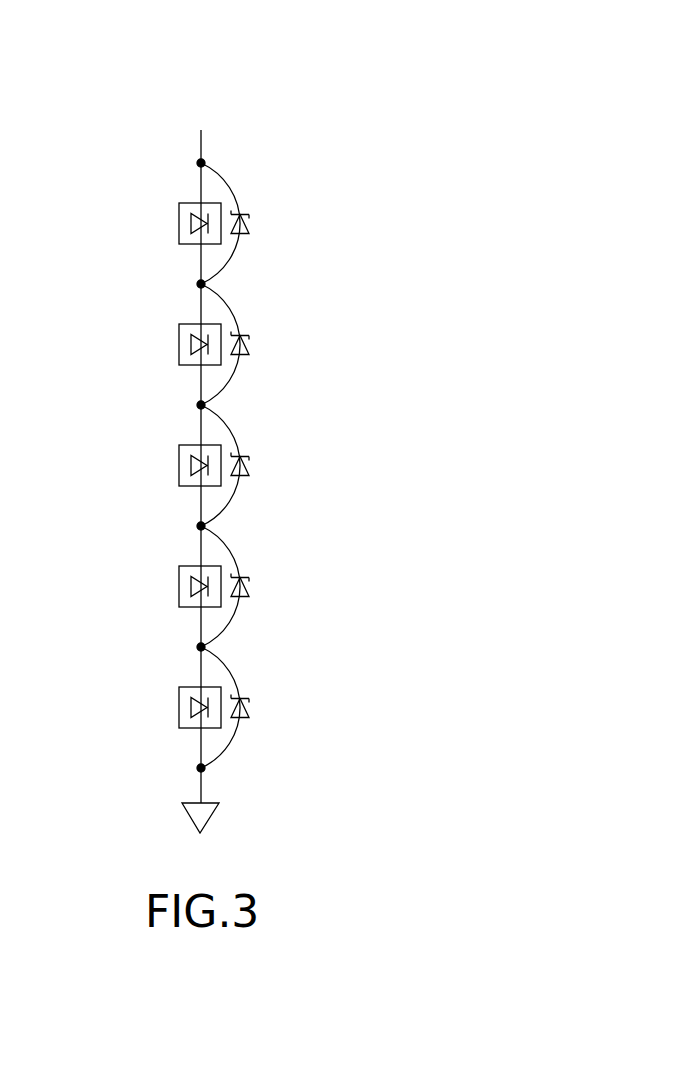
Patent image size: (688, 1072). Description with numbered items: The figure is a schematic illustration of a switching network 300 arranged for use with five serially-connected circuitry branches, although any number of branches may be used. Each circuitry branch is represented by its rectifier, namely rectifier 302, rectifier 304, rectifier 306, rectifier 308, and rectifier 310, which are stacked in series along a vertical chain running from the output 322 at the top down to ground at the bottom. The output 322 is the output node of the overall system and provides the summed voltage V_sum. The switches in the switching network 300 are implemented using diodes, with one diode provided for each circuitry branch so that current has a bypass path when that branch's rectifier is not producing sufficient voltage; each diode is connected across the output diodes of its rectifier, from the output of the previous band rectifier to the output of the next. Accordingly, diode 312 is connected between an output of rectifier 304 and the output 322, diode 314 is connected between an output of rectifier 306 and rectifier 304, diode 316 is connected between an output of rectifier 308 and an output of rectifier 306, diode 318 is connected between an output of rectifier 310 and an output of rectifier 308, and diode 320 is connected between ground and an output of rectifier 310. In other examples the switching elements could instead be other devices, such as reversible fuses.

The switching network 300 is at (385, 72).
The rectifier 302 is at (179, 222).
The rectifier 304 is at (179, 344).
The rectifier 306 is at (179, 464).
The rectifier 308 is at (179, 586).
The rectifier 310 is at (179, 706).
The diode 312 is at (250, 222).
The diode 314 is at (250, 344).
The diode 316 is at (250, 464).
The diode 318 is at (250, 586).
The diode 320 is at (250, 706).
The output 322 is at (203, 97).